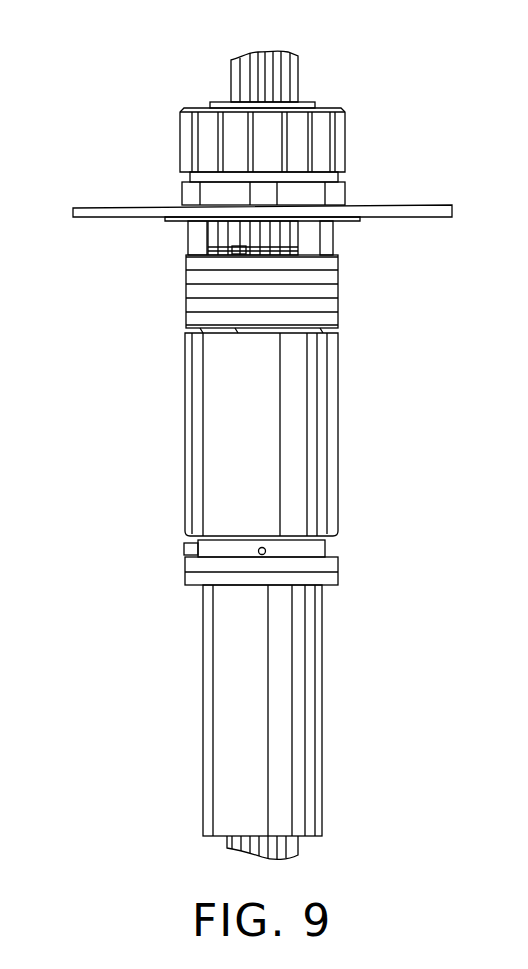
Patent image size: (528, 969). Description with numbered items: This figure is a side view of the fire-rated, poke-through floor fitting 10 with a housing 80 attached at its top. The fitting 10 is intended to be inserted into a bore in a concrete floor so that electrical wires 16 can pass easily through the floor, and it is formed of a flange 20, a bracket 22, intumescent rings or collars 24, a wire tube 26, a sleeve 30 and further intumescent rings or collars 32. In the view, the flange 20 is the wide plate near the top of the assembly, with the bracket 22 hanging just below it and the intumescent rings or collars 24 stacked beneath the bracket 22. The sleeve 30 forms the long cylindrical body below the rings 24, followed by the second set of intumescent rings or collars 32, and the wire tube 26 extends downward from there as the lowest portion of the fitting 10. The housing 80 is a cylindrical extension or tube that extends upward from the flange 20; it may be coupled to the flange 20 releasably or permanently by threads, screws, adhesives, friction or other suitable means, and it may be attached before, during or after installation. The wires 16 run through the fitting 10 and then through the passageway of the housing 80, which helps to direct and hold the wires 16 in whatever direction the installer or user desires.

The fitting 10 is at (118, 164).
The electrical wires 16 is at (304, 84).
The housing 80 is at (342, 157).
The flange 20 is at (395, 206).
The bracket 22 is at (305, 244).
The intumescent rings or collars 24 is at (332, 321).
The sleeve 30 is at (340, 463).
The intumescent rings or collars 32 is at (340, 582).
The wire tube 26 is at (292, 692).